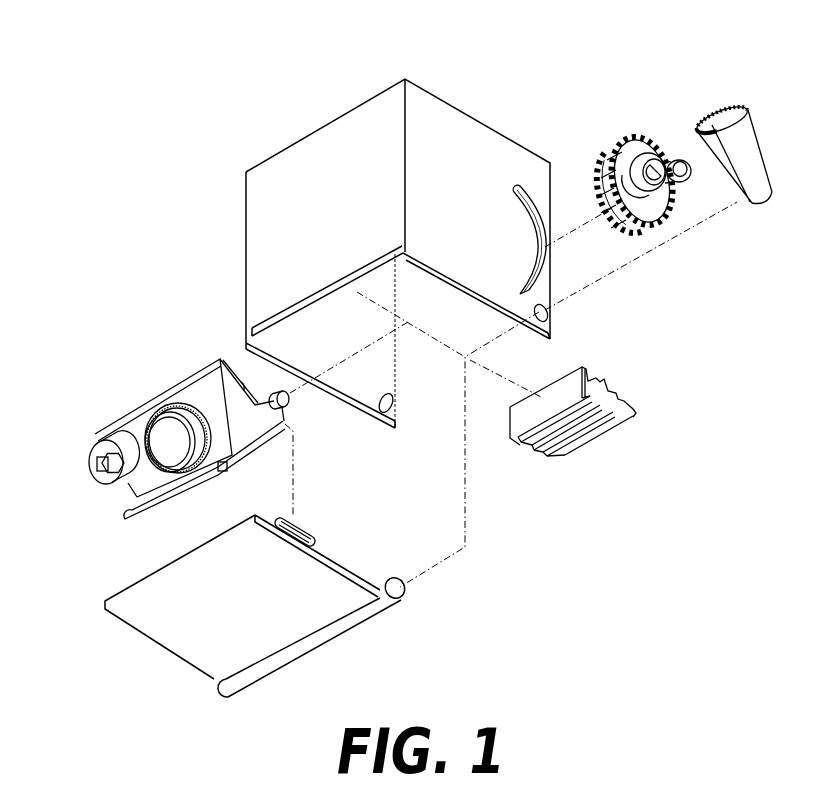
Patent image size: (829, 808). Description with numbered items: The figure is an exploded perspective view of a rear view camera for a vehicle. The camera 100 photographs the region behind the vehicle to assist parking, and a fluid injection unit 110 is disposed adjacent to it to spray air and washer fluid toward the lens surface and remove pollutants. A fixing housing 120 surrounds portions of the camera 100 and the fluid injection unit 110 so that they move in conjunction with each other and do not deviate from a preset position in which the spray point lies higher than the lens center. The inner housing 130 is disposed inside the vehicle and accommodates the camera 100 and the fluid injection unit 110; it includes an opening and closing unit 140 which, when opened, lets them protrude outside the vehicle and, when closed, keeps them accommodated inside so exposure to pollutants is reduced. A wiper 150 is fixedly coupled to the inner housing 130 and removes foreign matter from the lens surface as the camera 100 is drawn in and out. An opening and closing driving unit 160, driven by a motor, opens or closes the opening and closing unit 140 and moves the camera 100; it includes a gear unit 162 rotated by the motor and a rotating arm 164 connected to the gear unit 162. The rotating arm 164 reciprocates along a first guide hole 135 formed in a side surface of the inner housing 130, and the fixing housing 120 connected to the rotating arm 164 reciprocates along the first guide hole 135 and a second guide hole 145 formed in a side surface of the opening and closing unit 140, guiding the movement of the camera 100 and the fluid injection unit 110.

The camera 100 is at (160, 415).
The fluid injection unit 110 is at (95, 458).
The fixing housing 120 is at (212, 376).
The inner housing 130 is at (248, 208).
The first guide hole 135 is at (534, 258).
The opening and closing unit 140 is at (165, 637).
The second guide hole 145 is at (322, 538).
The wiper 150 is at (593, 433).
The opening and closing driving unit 160 is at (732, 57).
The gear unit 162 is at (624, 135).
The rotating arm 164 is at (672, 160).